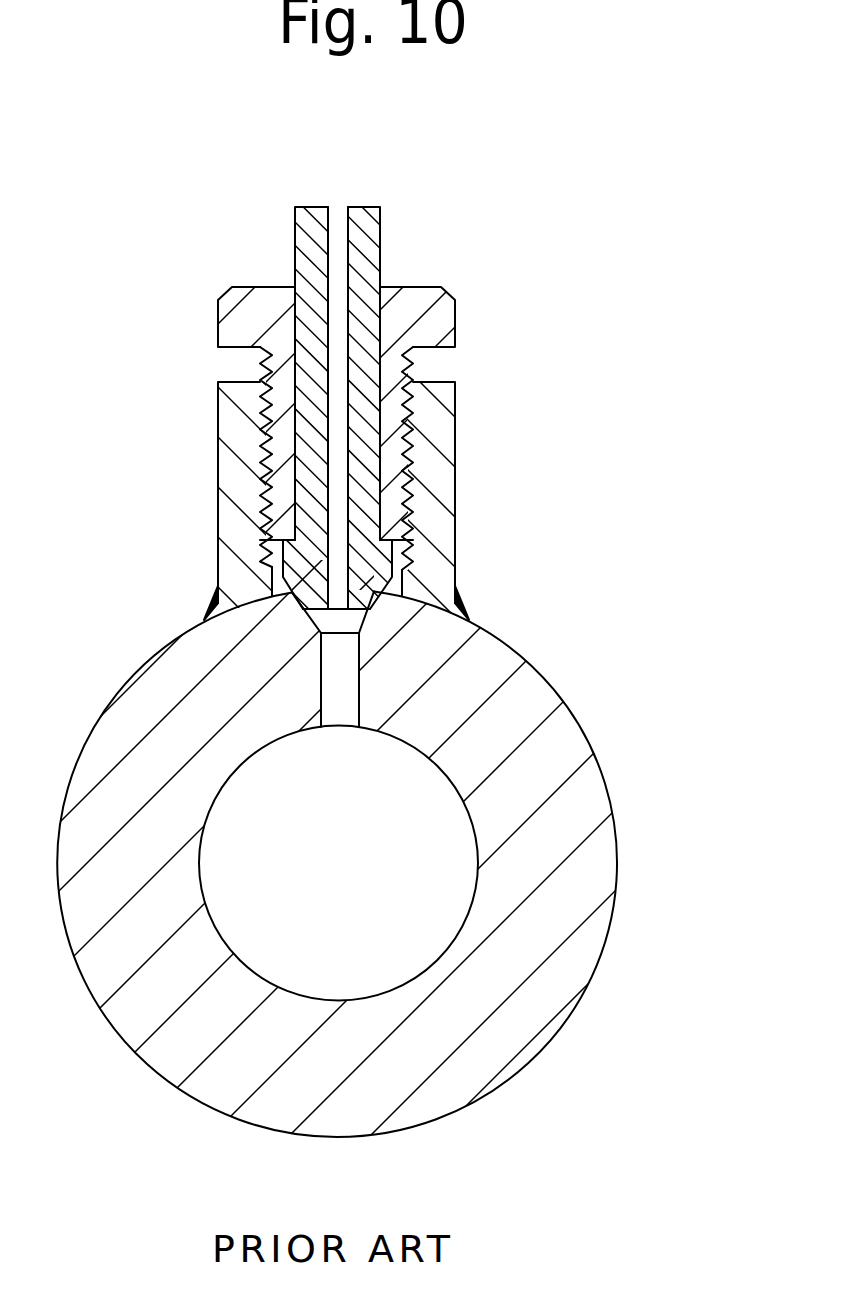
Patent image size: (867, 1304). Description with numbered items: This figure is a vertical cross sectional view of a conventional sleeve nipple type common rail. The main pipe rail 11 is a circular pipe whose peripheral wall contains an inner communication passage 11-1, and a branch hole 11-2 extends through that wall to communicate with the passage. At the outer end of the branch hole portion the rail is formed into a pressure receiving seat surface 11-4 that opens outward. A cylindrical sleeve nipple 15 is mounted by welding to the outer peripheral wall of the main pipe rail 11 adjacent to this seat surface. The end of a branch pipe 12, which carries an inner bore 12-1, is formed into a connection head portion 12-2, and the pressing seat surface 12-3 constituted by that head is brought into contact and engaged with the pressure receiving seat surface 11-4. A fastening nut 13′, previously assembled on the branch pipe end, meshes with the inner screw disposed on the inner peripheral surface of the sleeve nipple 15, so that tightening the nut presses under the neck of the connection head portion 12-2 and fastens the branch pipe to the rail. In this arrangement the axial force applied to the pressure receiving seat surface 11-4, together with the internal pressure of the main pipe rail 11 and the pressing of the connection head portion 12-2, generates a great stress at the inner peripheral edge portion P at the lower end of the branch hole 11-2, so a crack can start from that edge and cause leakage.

The main pipe rail 11 is at (568, 743).
The inner communication passage 11-1 is at (470, 895).
The branch hole 11-2 is at (355, 690).
The pressure receiving seat surface 11-4 is at (362, 624).
The branch pipe 12 is at (367, 238).
The pipe bore 12-1 is at (322, 240).
The connection head portion 12-2 is at (297, 560).
The pressing seat surface 12-3 is at (300, 615).
The fastening nut 13′ is at (455, 318).
The sleeve nipple 15 is at (455, 437).
The inner peripheral edge portion P is at (333, 730).